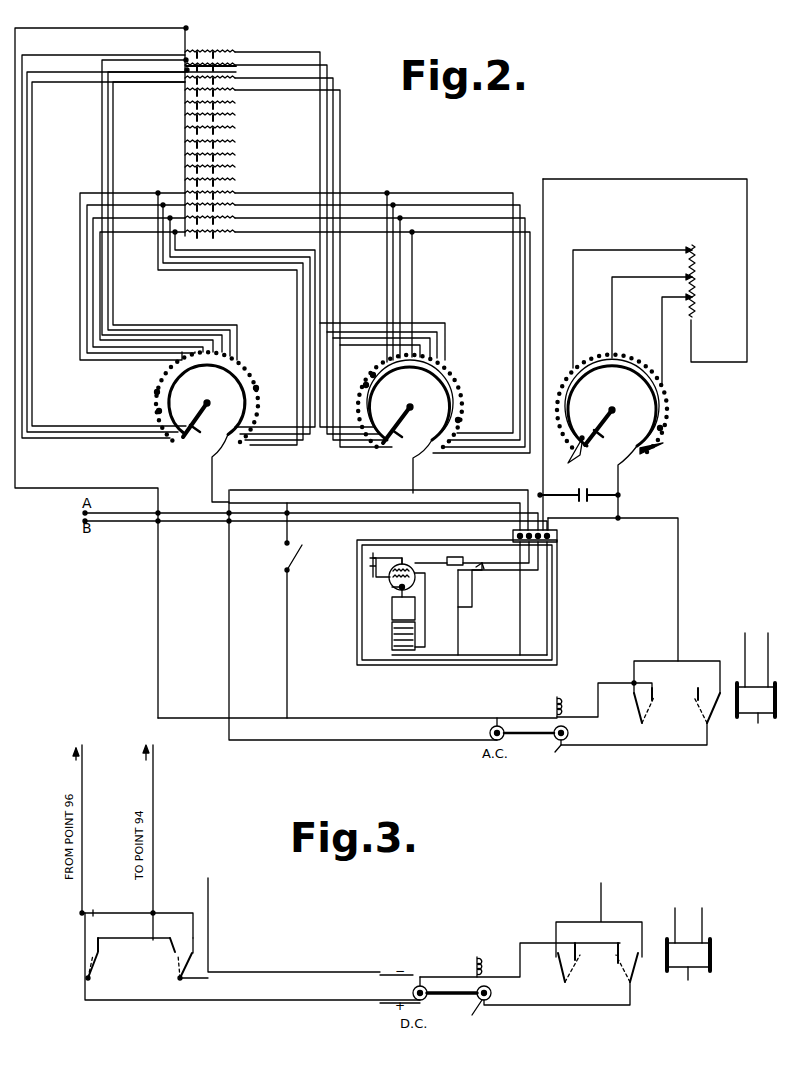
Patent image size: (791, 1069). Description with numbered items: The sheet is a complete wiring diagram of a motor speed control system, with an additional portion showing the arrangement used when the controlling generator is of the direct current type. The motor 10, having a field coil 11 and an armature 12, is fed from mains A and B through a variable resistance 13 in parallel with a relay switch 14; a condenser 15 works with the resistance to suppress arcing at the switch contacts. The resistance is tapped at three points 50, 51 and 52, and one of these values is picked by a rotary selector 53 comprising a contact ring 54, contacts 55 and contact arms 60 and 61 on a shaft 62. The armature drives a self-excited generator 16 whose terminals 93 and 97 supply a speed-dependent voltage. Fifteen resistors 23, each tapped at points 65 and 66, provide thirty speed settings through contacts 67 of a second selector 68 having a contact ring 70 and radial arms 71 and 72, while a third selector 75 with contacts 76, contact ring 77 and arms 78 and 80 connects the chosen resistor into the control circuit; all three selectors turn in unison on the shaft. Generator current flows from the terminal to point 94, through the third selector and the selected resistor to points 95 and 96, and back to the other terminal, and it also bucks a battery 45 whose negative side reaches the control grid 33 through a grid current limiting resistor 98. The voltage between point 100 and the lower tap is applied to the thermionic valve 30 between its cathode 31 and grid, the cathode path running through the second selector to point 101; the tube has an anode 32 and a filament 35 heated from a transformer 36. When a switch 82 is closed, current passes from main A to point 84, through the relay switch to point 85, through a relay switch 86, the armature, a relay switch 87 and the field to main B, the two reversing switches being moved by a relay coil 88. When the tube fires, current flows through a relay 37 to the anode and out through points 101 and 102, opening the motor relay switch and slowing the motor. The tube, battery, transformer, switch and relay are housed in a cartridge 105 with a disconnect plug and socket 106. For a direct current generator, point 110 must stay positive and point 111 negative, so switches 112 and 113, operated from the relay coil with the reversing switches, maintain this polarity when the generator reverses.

In FIG. 2, the motor 10 is at (555, 745).
In FIG. 3, the motor 10 is at (478, 1002).
In FIG. 2, the field coil 11 is at (566, 703).
In FIG. 3, the field coil 11 is at (483, 962).
In FIG. 2, the armature 12 is at (569, 734).
In FIG. 3, the armature 12 is at (492, 993).
In FIG. 2, the variable resistance 13 is at (698, 297).
In FIG. 2, the relay switch 14 is at (478, 568).
In FIG. 2, the condenser 15 is at (578, 500).
In FIG. 2, the self-excited generator 16 is at (508, 735).
In FIG. 3, the self-excited generator 16 is at (436, 980).
In FIG. 2, the resistor 23 is at (210, 52).
In FIG. 2, the thermionic valve 30 is at (398, 564).
In FIG. 2, the cathode 31 is at (415, 590).
In FIG. 2, the anode 32 is at (408, 568).
In FIG. 2, the control grid 33 is at (392, 587).
In FIG. 2, the filament 35 is at (398, 592).
In FIG. 2, the transformer 36 is at (390, 634).
In FIG. 2, the relay 37 is at (456, 557).
In FIG. 2, the battery 45 is at (372, 558).
In FIG. 2, the tapped resistance point 50 is at (694, 300).
In FIG. 2, the tapped resistance point 51 is at (694, 280).
In FIG. 2, the tapped resistance point 52 is at (694, 250).
In FIG. 2, the rotary selector 53 is at (612, 436).
In FIG. 2, the contact ring 54 is at (662, 428).
In FIG. 2, the contacts 55 is at (664, 448).
In FIG. 2, the contact arm 60 is at (598, 423).
In FIG. 2, the contact arm 61 is at (600, 432).
In FIG. 2, the shaft 62 is at (210, 404).
In FIG. 2, the tap point 65 is at (187, 70).
In FIG. 2, the tap point 66 is at (225, 66).
In FIG. 2, the contacts 67 is at (147, 399).
In FIG. 2, the rotary selector 68 is at (218, 386).
In FIG. 2, the contact ring 70 is at (258, 388).
In FIG. 2, the radial contact arm 71 is at (196, 420).
In FIG. 2, the radial contact arm 72 is at (198, 430).
In FIG. 2, the third selector 75 is at (420, 390).
In FIG. 2, the contacts 76 is at (366, 384).
In FIG. 2, the contact ring 77 is at (461, 420).
In FIG. 2, the radial contact arm 78 is at (396, 421).
In FIG. 2, the radial contact arm 80 is at (402, 432).
In FIG. 2, the switch 82 is at (285, 557).
In FIG. 2, the point 84 is at (460, 605).
In FIG. 2, the point 85 is at (679, 661).
In FIG. 3, the point 85 is at (603, 922).
In FIG. 2, the relay switch 86 is at (713, 720).
In FIG. 3, the relay switch 86 is at (638, 975).
In FIG. 2, the relay switch 87 is at (646, 712).
In FIG. 3, the relay switch 87 is at (570, 972).
In FIG. 2, the relay coil 88 is at (756, 692).
In FIG. 3, the relay coil 88 is at (688, 955).
In FIG. 2, the terminal 93 is at (489, 736).
In FIG. 3, the terminal 93 is at (426, 998).
In FIG. 2, the point 94 is at (413, 493).
In FIG. 2, the point 95 is at (186, 62).
In FIG. 2, the point 96 is at (192, 24).
In FIG. 2, the terminal 97 is at (497, 726).
In FIG. 3, the terminal 97 is at (420, 986).
In FIG. 2, the grid current limiting resistor 98 is at (370, 577).
In FIG. 2, the point 100 is at (236, 70).
In FIG. 2, the point 101 is at (427, 647).
In FIG. 2, the point 102 is at (288, 503).
In FIG. 2, the cartridge 105 is at (558, 604).
In FIG. 2, the disconnect plug and socket 106 is at (559, 536).
In FIG. 3, the point 110 is at (140, 940).
In FIG. 3, the point 111 is at (80, 913).
In FIG. 3, the switch 112 is at (92, 975).
In FIG. 3, the switch 113 is at (178, 975).